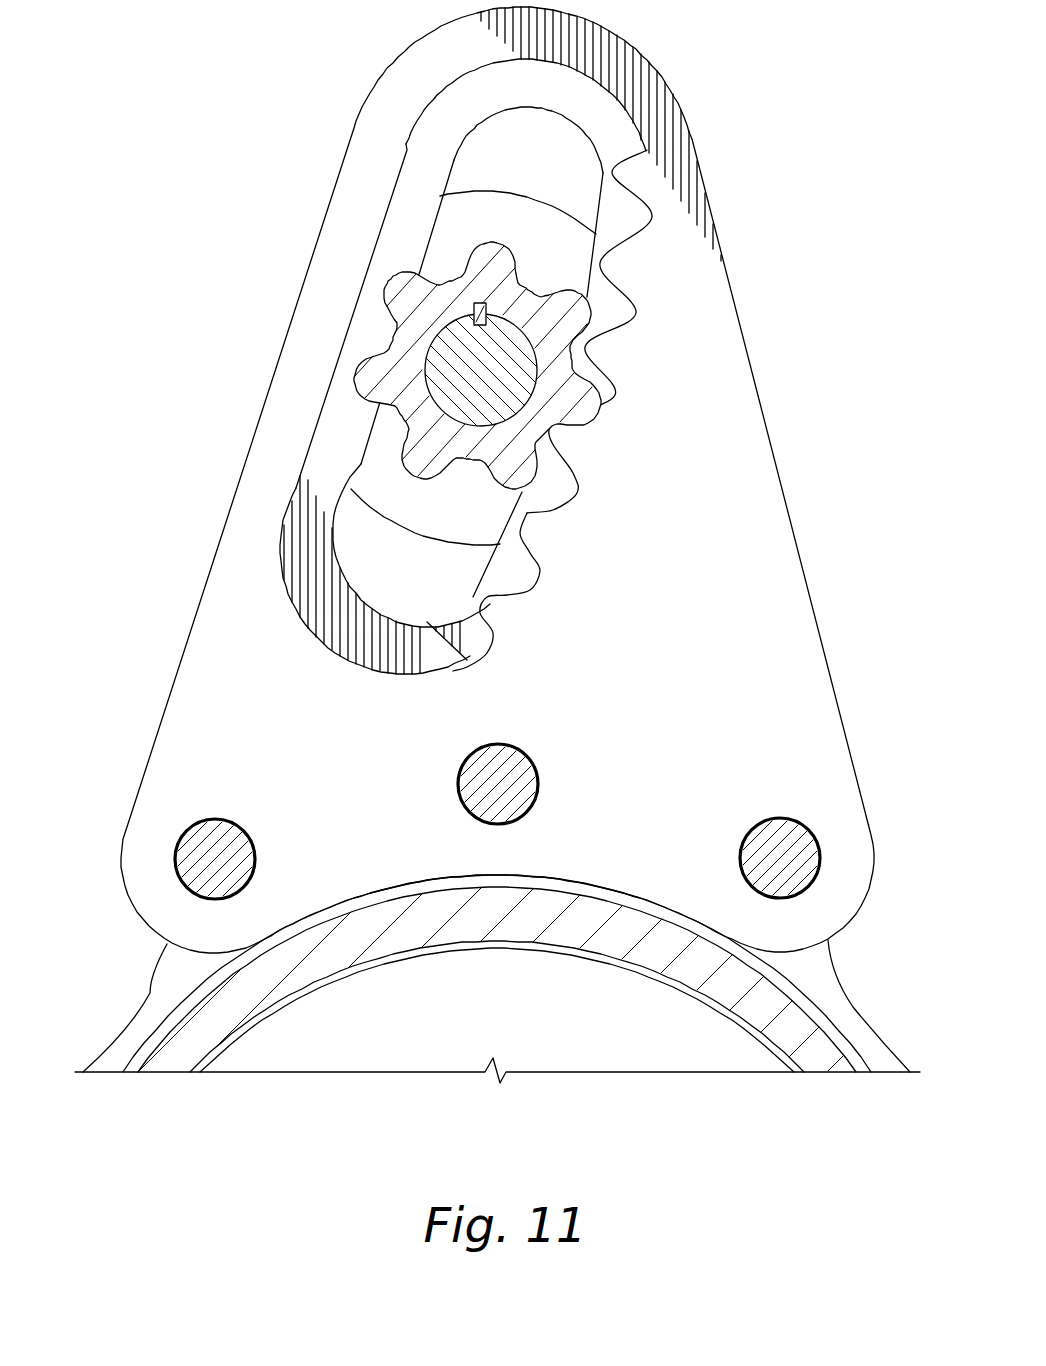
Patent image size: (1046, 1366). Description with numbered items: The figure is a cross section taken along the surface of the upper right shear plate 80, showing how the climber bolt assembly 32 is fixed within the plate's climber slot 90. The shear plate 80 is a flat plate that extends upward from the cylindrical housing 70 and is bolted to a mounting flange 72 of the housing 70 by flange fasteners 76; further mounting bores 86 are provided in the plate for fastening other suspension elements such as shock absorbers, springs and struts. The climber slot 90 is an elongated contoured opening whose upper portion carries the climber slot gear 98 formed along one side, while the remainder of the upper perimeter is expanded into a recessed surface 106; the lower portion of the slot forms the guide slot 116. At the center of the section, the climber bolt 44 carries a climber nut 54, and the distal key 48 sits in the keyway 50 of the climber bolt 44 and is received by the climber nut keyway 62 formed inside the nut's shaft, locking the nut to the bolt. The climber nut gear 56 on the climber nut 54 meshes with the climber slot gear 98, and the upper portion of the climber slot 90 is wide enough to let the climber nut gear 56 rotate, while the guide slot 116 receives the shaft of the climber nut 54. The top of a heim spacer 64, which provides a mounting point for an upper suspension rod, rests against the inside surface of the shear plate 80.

The climber bolt assembly 32 is at (623, 468).
The climber bolt 44 is at (510, 362).
The distal key 48 is at (481, 303).
The keyway 50 is at (477, 305).
The climber nut 54 is at (385, 353).
The climber nut gear 56 is at (498, 257).
The climber nut keyway 62 is at (492, 308).
The heim spacer 64 is at (383, 505).
The cylindrical housing 70 is at (160, 1025).
The mounting flange 72 is at (877, 1017).
The flange fastener 76 is at (230, 832).
The upper right shear plate 80 is at (187, 642).
The mounting bore 86 is at (215, 900).
The climber slot 90 is at (460, 77).
The climber slot gear 98 is at (490, 602).
The recessed surface 106 is at (438, 132).
The guide slot 116 is at (580, 130).